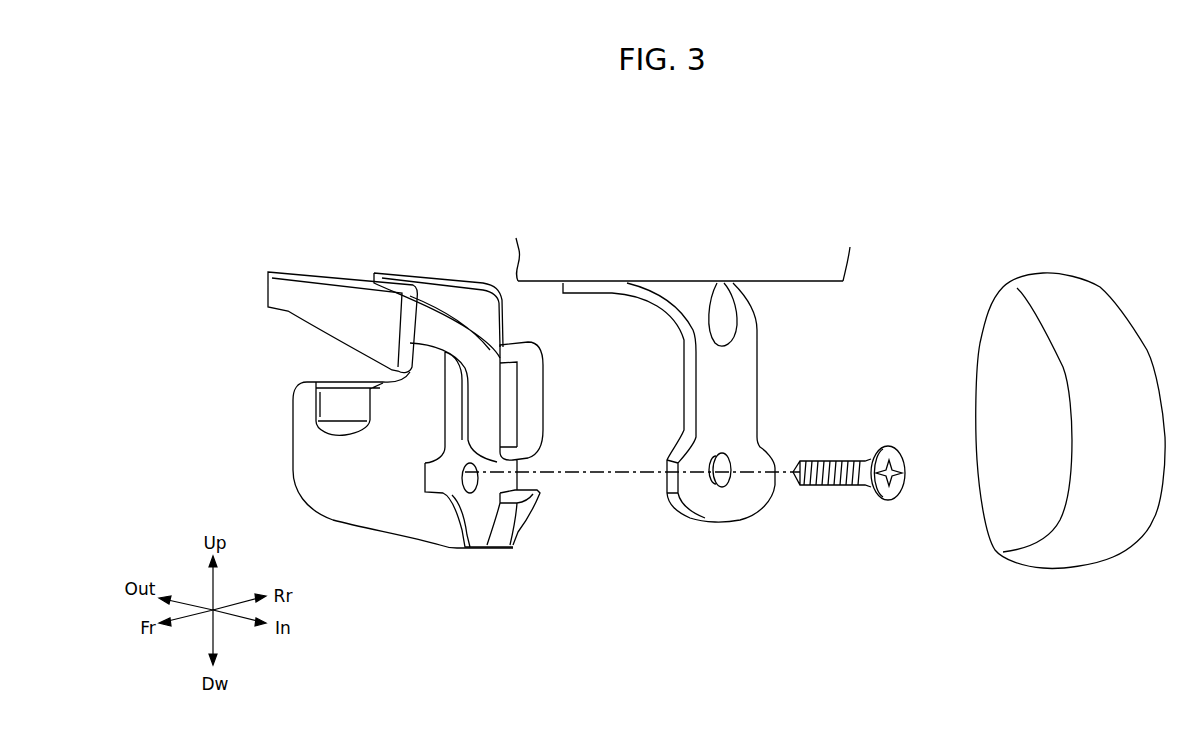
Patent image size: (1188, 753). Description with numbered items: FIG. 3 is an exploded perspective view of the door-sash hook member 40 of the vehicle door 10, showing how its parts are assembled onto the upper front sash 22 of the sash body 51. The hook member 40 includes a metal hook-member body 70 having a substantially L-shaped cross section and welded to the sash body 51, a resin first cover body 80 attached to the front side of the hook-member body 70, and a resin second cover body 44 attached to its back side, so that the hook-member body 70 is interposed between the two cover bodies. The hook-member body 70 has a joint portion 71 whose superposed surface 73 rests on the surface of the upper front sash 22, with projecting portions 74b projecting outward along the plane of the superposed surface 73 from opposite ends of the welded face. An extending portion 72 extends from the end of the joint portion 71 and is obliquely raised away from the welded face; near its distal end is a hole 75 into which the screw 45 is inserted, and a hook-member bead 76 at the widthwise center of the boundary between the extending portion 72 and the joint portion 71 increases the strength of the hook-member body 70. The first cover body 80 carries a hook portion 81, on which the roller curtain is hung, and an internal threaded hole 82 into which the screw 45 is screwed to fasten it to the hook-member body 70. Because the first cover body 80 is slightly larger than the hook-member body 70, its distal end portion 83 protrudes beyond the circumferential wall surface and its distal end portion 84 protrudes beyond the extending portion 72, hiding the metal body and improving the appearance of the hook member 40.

The door mirror device 10 is at (313, 157).
The upper front sash 22 is at (650, 249).
The hook member 40 is at (893, 643).
The second cover body 44 is at (1000, 568).
The screw 45 is at (825, 487).
The sash body 51 is at (807, 263).
The hook-member body 70 is at (691, 415).
The joint portion 71 is at (593, 284).
The extending portion 72 is at (691, 396).
The superposed surface 73 is at (597, 281).
The projecting portions 74b is at (573, 292).
The hole 75 is at (713, 460).
The hook-member bead 76 is at (724, 283).
The first cover body 80 is at (381, 419).
The hook portion 81 is at (352, 422).
The internal threaded hole 82 is at (477, 479).
The distal end portion 83 is at (262, 283).
The distal end portion 84 is at (467, 547).